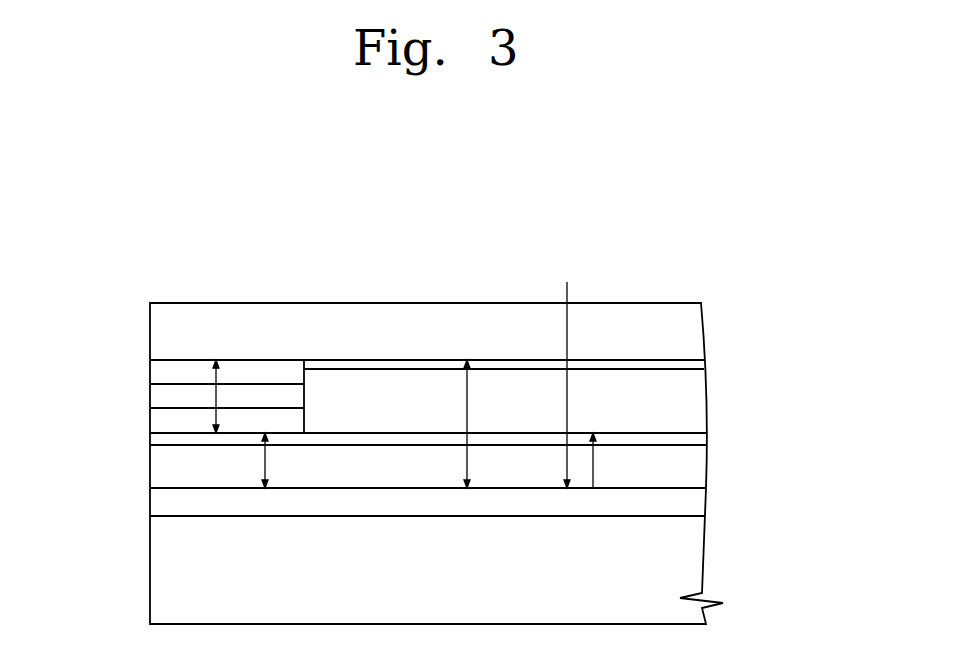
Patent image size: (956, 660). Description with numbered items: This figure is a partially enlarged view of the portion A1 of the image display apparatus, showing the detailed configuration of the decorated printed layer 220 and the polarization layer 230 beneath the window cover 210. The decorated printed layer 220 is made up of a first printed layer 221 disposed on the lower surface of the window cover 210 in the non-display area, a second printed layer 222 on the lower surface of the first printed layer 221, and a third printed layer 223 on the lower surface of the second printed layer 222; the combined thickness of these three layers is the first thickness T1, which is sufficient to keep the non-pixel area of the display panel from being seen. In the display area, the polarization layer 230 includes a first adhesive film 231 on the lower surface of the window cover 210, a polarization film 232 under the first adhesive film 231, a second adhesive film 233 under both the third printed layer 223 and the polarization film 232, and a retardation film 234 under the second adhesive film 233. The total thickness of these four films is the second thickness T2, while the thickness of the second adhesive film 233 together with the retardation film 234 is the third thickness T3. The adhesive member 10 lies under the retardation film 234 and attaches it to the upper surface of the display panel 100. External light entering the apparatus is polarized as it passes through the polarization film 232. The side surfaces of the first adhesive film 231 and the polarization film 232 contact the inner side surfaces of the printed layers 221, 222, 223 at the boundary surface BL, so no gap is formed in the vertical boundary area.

The display panel 100 is at (157, 569).
The adhesive member 10 is at (157, 502).
The window cover 210 is at (150, 333).
The decorated printed layer 220 is at (357, 398).
The first printed layer 221 is at (150, 368).
The second printed layer 222 is at (150, 395).
The third printed layer 223 is at (150, 422).
The polarization layer 230 is at (498, 420).
The first adhesive film 231 is at (705, 364).
The polarization film 232 is at (693, 403).
The second adhesive film 233 is at (697, 437).
The retardation film 234 is at (740, 472).
The boundary surface BL is at (307, 395).
The portion A1 is at (718, 226).
The first thickness T1 is at (203, 396).
The second thickness T2 is at (453, 424).
The third thickness T3 is at (252, 460).